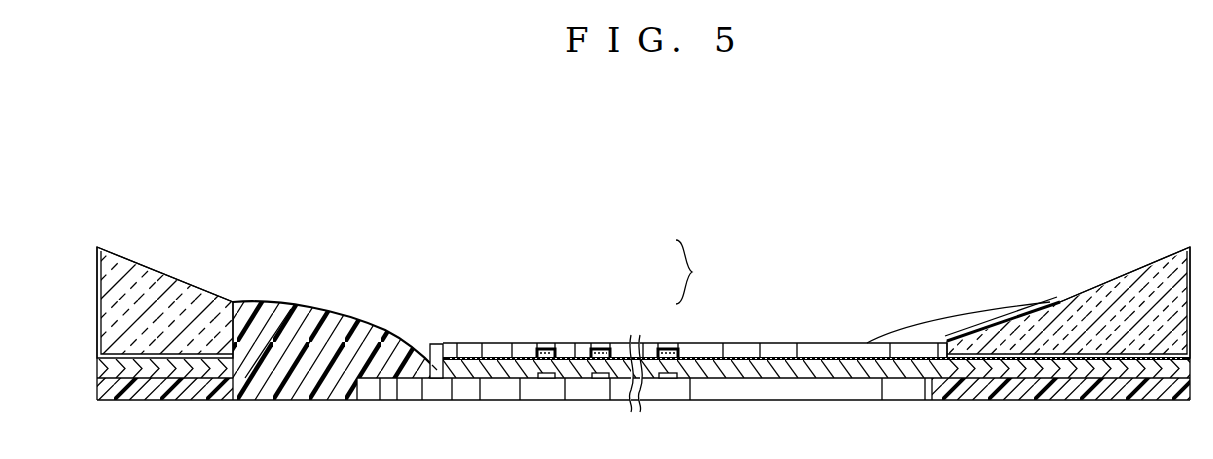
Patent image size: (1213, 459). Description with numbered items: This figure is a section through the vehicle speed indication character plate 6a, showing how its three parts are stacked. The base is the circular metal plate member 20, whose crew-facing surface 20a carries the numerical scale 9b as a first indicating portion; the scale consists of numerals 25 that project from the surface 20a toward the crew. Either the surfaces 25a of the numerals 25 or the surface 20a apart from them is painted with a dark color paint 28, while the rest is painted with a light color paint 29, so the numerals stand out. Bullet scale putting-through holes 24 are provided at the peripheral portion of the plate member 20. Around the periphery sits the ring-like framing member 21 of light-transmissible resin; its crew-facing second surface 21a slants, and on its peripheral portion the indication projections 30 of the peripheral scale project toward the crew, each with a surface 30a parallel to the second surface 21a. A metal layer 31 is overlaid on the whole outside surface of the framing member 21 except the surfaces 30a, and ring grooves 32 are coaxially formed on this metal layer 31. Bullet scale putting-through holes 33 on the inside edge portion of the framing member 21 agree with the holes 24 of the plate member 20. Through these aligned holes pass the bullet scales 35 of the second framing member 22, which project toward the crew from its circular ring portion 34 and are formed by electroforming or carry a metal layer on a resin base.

The vehicle speed indication character plate 6a is at (825, 165).
The numerical scale 9b is at (700, 272).
The plate member 20 is at (764, 350).
The surface of the plate member 20a is at (818, 352).
The framing member 21 is at (212, 291).
The second surface 21a is at (1013, 306).
The second framing member 22 is at (351, 317).
The bullet scale putting-through hole 24 is at (428, 352).
The numeral 25 is at (558, 348).
The surface of the numeral 25a is at (542, 348).
The dark color paint 28 is at (489, 354).
The light color paint 29 is at (552, 348).
The indication projection 30 is at (153, 270).
The surface of the indication projection 30a is at (174, 280).
The metal layer 31 is at (1055, 297).
The ring groove 32 is at (958, 337).
The bullet scale putting-through hole 33 is at (260, 312).
The circular ring portion 34 is at (170, 397).
The bullet scale 35 is at (303, 313).